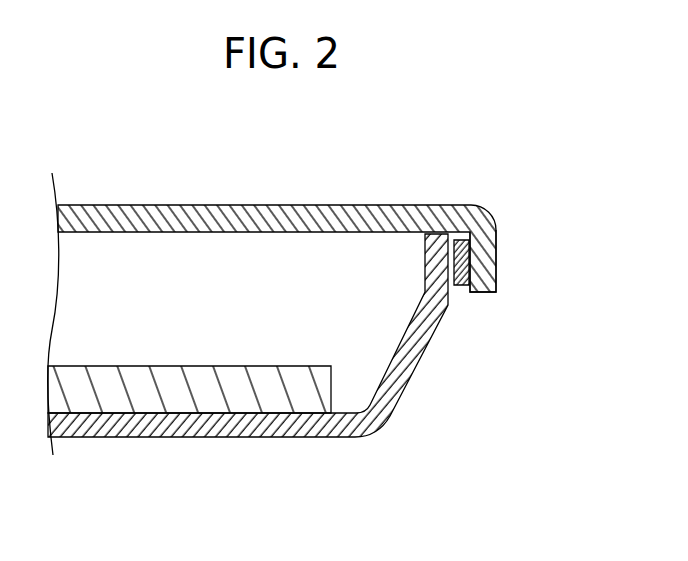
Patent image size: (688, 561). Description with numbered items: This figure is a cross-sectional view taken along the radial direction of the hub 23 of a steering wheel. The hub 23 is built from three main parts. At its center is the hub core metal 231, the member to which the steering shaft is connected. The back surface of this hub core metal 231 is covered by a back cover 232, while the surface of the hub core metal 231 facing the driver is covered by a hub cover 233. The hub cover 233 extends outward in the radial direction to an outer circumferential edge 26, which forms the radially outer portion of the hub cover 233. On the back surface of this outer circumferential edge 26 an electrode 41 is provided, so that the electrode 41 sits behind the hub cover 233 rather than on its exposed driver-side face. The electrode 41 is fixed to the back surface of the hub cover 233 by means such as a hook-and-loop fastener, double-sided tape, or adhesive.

The hub 23 is at (323, 302).
The hub cover 233 is at (257, 206).
The outer circumferential edge 26 is at (487, 260).
The back cover 232 is at (263, 420).
The hub core metal 231 is at (176, 397).
The electrode 41 is at (458, 287).